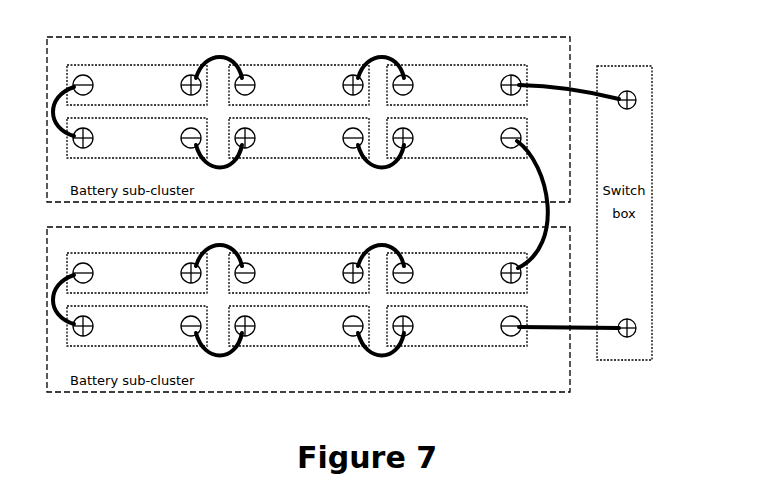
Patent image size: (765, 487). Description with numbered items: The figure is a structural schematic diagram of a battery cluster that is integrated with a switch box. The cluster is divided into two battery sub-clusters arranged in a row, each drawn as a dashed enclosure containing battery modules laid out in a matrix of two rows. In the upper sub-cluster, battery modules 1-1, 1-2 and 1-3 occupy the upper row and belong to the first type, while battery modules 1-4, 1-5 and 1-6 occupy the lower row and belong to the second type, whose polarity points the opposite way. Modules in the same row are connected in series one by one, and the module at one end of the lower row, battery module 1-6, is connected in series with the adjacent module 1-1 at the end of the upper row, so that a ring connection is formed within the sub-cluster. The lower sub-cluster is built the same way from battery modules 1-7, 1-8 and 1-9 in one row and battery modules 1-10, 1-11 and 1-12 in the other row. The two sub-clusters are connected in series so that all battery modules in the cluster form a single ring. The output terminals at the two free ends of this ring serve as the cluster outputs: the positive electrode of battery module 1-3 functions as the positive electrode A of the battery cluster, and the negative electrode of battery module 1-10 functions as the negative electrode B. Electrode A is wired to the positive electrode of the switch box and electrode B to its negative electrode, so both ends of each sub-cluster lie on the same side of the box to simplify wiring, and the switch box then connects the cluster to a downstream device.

The battery module 1-1 is at (137, 85).
The battery module 1-2 is at (299, 85).
The battery module 1-3 is at (457, 85).
The battery module 1-4 is at (457, 138).
The battery module 1-5 is at (299, 138).
The battery module 1-6 is at (137, 138).
The battery module 1-7 is at (137, 273).
The battery module 1-8 is at (299, 273).
The battery module 1-9 is at (457, 273).
The battery module 1-10 is at (457, 326).
The battery module 1-11 is at (299, 326).
The battery module 1-12 is at (137, 326).
The positive electrode of the battery cluster A is at (547, 63).
The negative electrode of the battery cluster B is at (547, 360).